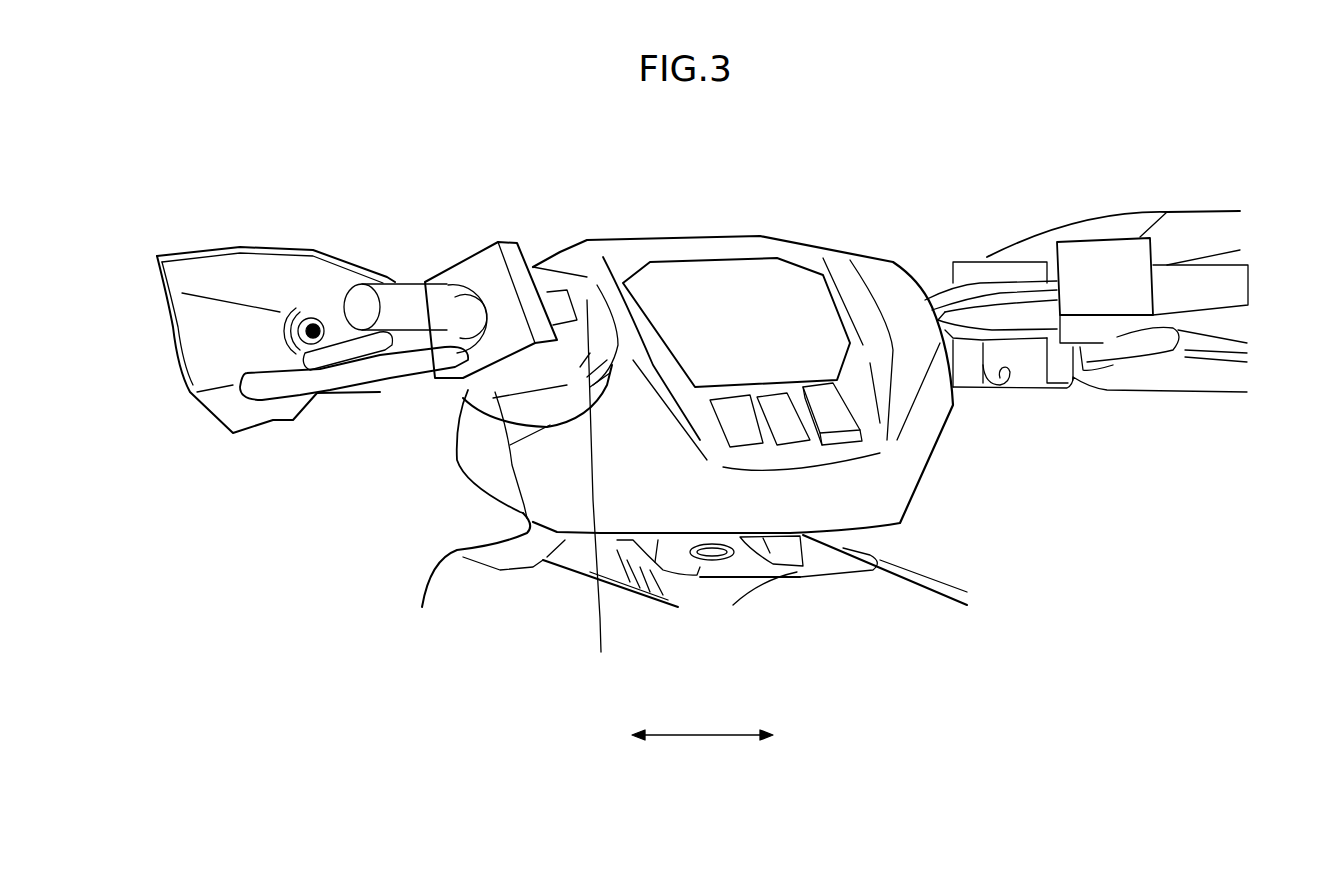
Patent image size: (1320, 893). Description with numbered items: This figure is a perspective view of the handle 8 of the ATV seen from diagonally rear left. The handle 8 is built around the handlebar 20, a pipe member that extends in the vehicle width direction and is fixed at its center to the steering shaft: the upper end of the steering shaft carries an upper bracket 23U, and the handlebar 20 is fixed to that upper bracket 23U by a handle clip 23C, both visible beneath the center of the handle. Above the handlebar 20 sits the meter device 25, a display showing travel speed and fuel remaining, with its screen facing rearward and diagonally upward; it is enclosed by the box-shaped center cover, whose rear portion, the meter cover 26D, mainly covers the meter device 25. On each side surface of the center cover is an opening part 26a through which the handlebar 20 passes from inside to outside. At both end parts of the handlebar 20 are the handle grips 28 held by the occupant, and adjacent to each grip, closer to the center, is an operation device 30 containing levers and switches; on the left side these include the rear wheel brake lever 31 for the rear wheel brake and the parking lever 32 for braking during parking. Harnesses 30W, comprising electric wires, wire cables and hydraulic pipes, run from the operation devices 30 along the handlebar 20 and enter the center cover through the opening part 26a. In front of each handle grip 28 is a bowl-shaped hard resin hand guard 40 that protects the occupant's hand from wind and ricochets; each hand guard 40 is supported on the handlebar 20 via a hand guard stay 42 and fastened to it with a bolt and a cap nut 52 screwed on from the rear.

The handle 8 is at (787, 213).
The handlebar 20 is at (463, 473).
The upper bracket 23U is at (673, 547).
The handle clip 23C is at (713, 547).
The meter device 25 is at (730, 300).
The meter cover 26D is at (610, 250).
The opening part 26a is at (597, 492).
The handle grip 28 is at (405, 305).
The operation device 30 is at (449, 388).
The harness 30W is at (1004, 302).
The rear wheel brake lever 31 is at (265, 385).
The parking lever 32 is at (325, 352).
The hand guard 40 is at (258, 287).
The hand guard stay 42 is at (493, 398).
The nut 52 is at (313, 328).